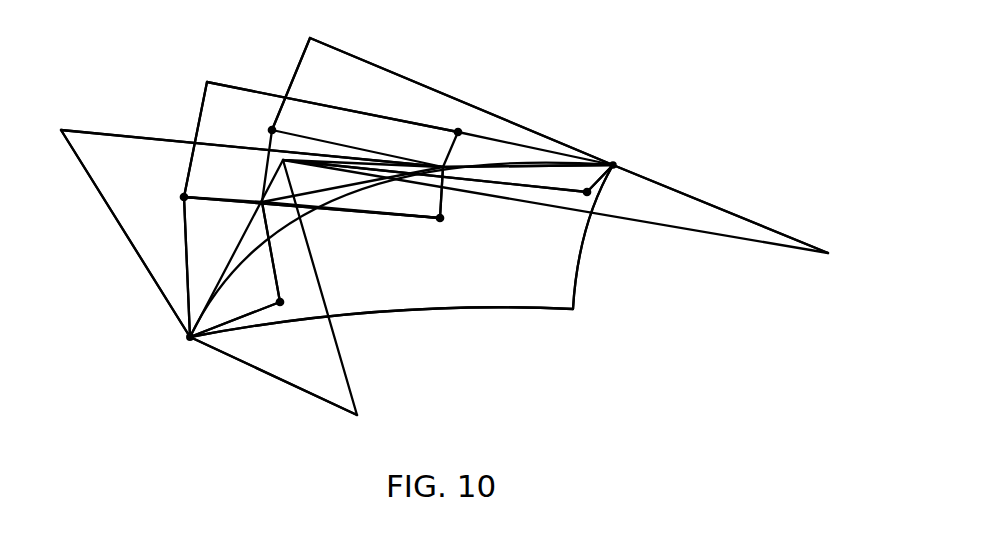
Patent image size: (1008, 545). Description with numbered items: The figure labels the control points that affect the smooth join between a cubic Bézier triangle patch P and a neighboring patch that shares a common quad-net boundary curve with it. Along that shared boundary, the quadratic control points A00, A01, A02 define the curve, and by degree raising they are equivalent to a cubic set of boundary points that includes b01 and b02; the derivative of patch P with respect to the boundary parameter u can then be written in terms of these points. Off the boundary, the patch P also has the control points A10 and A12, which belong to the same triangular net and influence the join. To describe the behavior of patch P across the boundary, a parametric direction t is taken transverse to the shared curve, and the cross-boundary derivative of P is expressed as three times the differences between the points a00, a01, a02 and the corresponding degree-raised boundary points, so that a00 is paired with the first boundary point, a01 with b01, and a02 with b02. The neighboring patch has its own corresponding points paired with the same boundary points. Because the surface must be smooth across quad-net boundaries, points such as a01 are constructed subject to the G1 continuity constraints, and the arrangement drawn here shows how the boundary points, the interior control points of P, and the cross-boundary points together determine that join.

The control point A00 is at (337, 272).
The control point A01 is at (554, 277).
The control point A02 is at (569, 173).
The control point A10 is at (297, 389).
The control point A12 is at (743, 220).
The point a00 is at (257, 269).
The point a01 is at (333, 200).
The point a02 is at (458, 185).
The degree-raised boundary control point b01 is at (313, 192).
The degree-raised boundary control point b02 is at (337, 174).
The patch P is at (401, 251).